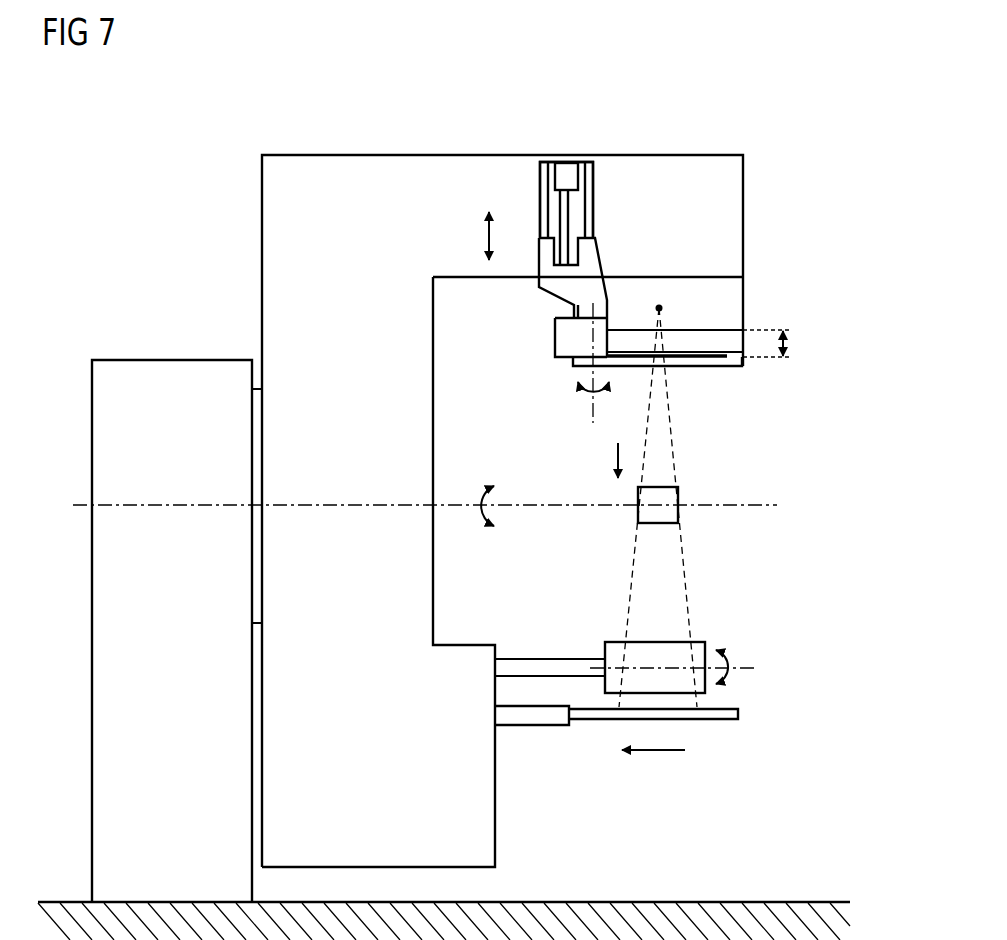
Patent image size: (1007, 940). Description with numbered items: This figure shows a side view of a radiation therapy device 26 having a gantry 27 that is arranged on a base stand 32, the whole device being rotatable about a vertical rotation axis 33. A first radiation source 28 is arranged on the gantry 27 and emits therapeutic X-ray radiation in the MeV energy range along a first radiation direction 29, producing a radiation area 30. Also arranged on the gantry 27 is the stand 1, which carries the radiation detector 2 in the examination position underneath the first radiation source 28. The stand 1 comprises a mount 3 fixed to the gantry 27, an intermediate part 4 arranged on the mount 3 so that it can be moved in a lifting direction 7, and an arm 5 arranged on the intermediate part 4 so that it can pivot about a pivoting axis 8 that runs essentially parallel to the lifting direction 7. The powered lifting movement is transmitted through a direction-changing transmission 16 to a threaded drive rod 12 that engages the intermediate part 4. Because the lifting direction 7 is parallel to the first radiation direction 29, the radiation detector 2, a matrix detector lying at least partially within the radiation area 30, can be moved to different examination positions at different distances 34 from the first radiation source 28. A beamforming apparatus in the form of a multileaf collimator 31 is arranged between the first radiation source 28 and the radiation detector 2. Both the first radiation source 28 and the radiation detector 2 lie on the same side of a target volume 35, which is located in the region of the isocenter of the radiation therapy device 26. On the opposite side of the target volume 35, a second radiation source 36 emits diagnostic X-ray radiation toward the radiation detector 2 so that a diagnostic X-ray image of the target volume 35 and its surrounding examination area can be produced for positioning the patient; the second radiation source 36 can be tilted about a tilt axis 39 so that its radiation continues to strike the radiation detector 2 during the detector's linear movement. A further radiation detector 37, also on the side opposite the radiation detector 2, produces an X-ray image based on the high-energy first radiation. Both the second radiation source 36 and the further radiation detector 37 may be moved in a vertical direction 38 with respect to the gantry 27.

The stand 1 is at (613, 191).
The radiation detector 2 is at (689, 368).
The mount 3 is at (547, 192).
The intermediate part 4 is at (545, 260).
The arm 5 is at (558, 338).
The lifting direction 7 is at (485, 233).
The pivoting axis 8 is at (593, 408).
The drive rod 12 is at (567, 220).
The direction-changing transmission 16 is at (565, 172).
The radiation therapy device 26 is at (173, 148).
The gantry 27 is at (360, 172).
The first radiation source 28 is at (730, 302).
The first radiation direction 29 is at (615, 458).
The radiation area 30 is at (658, 448).
The multileaf collimator 31 is at (725, 343).
The base stand 32 is at (174, 368).
The vertical rotation axis 33 is at (156, 505).
The distance 34 is at (790, 343).
The target volume 35 is at (668, 512).
The second radiation source 36 is at (697, 645).
The further radiation detector 37 is at (723, 715).
The vertical direction 38 is at (655, 752).
The tilt axis 39 is at (757, 667).